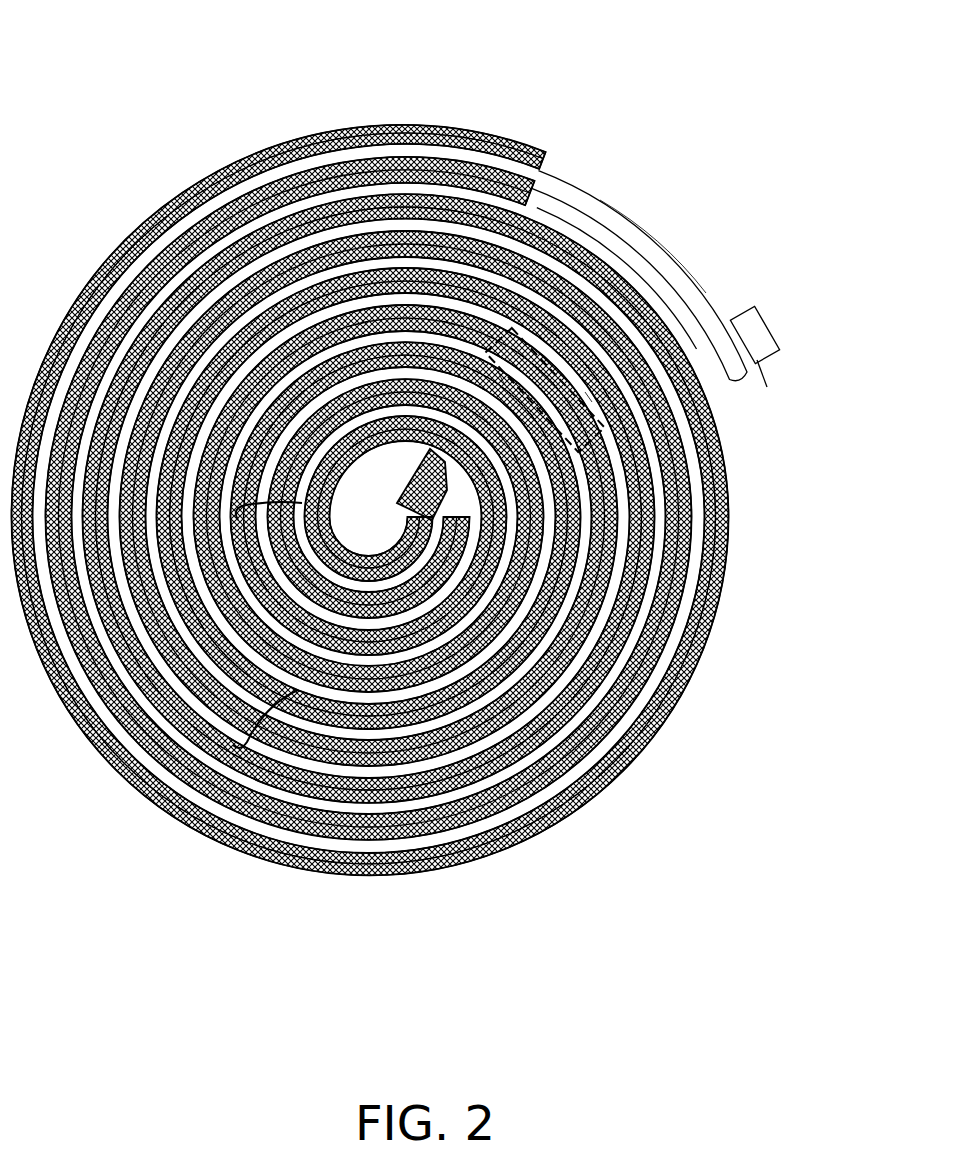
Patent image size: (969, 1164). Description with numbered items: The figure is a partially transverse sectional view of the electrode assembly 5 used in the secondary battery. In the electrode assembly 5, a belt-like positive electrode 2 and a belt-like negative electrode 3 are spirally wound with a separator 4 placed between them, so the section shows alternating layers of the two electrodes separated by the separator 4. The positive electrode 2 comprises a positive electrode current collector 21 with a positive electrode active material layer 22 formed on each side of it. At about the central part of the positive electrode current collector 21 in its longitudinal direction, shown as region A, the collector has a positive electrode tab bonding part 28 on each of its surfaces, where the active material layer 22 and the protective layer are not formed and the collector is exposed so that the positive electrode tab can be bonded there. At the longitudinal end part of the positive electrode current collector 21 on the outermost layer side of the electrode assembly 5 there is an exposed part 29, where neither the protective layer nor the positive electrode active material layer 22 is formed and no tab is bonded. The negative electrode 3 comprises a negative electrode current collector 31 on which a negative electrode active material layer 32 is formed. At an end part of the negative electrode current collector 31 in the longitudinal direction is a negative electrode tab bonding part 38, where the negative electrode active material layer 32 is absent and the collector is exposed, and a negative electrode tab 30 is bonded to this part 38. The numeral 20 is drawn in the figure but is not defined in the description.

The electrode assembly 5 is at (52, 36).
The positive electrode 2 is at (325, 953).
The positive electrode current collector 21 is at (259, 795).
The positive electrode active material layer 22 is at (215, 800).
The negative electrode 3 is at (812, 530).
The negative electrode current collector 31 is at (650, 568).
The negative electrode active material layer 32 is at (372, 125).
The separator 4 is at (583, 727).
The electrode end portion 20 is at (585, 392).
The positive electrode tab bonding part 28 is at (498, 372).
The exposed part 29 is at (566, 225).
The negative electrode tab 30 is at (750, 332).
The negative electrode tab bonding part 38 is at (700, 292).
The region A is at (602, 438).